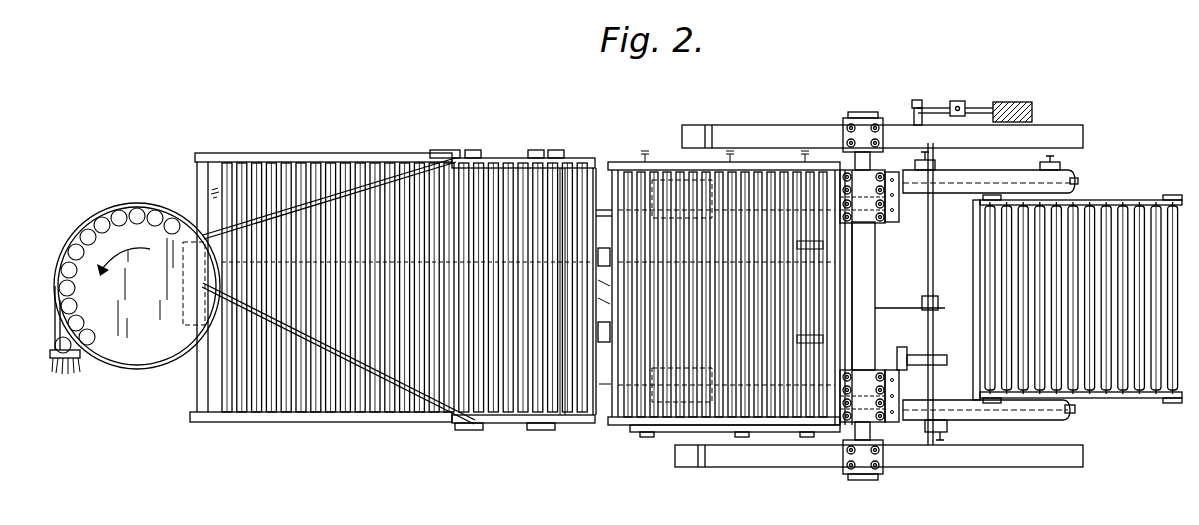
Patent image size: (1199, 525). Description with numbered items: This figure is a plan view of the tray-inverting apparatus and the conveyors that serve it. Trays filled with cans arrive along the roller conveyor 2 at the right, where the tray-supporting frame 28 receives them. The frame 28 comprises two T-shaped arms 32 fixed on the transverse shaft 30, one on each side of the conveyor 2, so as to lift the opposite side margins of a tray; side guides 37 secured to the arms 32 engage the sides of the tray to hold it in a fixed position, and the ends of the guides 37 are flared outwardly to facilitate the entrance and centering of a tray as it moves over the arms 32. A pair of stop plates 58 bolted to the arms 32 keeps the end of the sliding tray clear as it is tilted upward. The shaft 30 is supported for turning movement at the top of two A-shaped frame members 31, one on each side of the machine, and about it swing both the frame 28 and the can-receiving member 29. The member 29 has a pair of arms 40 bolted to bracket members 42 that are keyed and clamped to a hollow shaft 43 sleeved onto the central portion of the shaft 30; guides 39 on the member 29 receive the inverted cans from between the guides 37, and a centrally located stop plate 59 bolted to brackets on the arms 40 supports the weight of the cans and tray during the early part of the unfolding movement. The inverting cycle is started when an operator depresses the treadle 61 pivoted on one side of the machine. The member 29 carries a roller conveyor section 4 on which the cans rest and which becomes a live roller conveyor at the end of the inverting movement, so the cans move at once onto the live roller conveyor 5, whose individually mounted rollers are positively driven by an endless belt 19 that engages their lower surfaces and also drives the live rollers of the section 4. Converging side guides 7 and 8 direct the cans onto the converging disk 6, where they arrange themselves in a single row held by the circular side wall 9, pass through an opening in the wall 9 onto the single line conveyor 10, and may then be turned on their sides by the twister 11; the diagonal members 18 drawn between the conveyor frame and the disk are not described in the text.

The conveyor 2 is at (1137, 382).
The roller conveyor section 4 is at (632, 372).
The live roller conveyor 5 is at (517, 400).
The converging disk 6 is at (142, 366).
The converging side guide 7 is at (357, 380).
The converging side guide 8 is at (366, 165).
The circular side wall 9 is at (150, 206).
The single line conveyor 10 is at (52, 327).
The twister 11 is at (72, 372).
The braces 18 is at (436, 156).
The endless belt 19 is at (605, 297).
The tray-supporting frame 28 is at (1163, 405).
The can-receiving member 29 is at (672, 425).
The transverse shaft 30 is at (855, 455).
The A-shaped frame member 31 is at (800, 125).
The arm 32 is at (1078, 180).
The side guide 37 is at (1012, 176).
The guide 39 is at (617, 162).
The arm 40 is at (672, 200).
The bracket member 42 is at (870, 224).
The hollow shaft 43 is at (875, 281).
The stop plate 58 is at (899, 207).
The stop plate 59 is at (838, 340).
The treadle 61 is at (1025, 102).